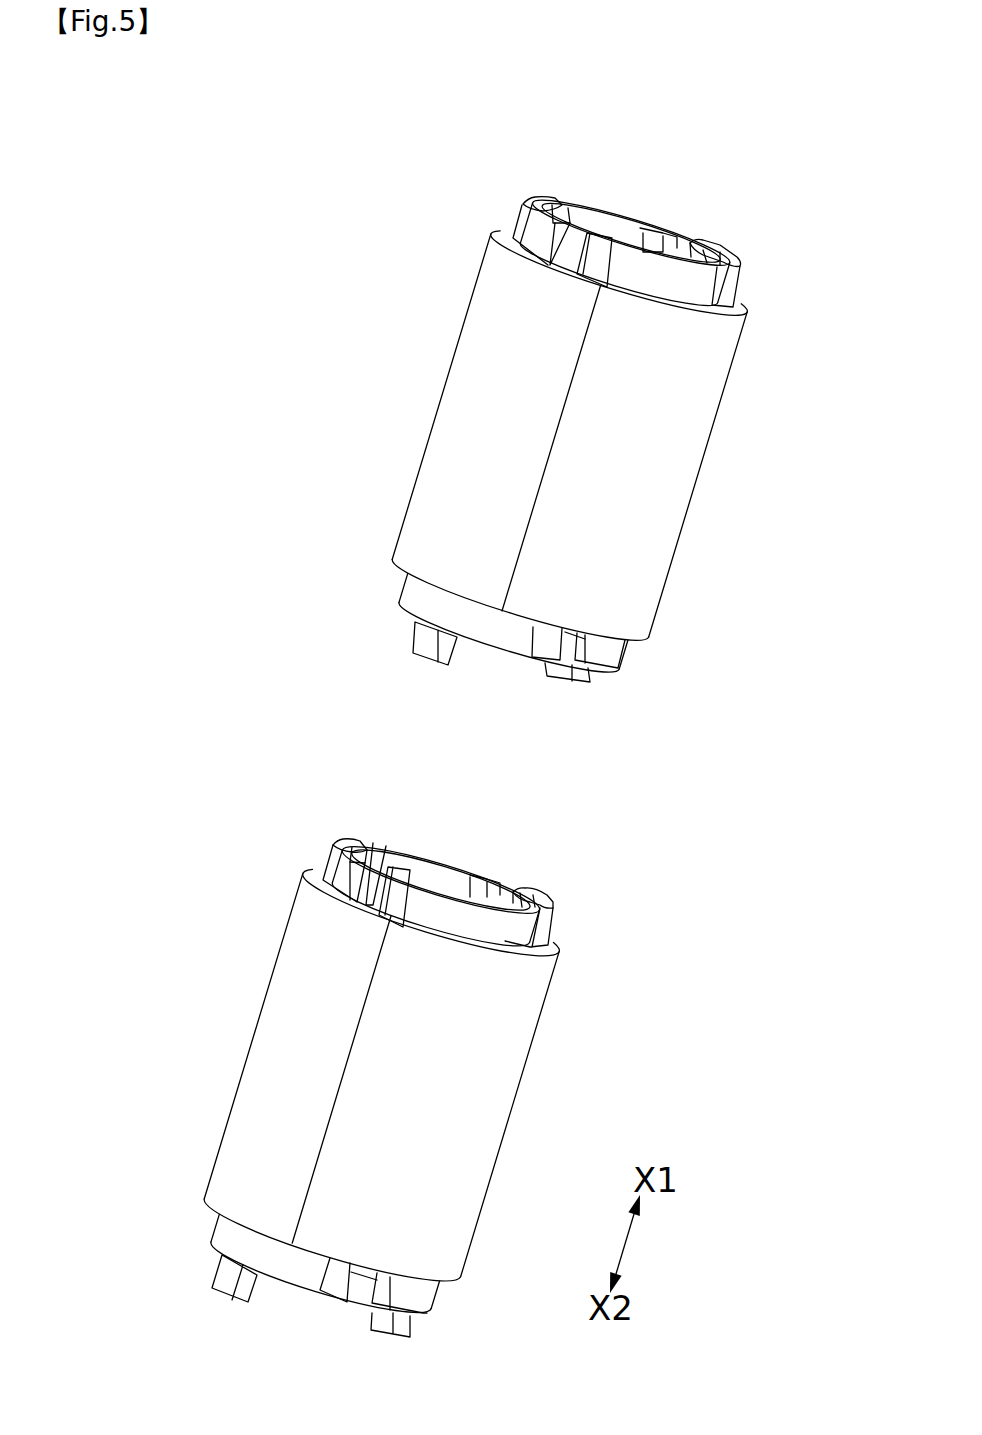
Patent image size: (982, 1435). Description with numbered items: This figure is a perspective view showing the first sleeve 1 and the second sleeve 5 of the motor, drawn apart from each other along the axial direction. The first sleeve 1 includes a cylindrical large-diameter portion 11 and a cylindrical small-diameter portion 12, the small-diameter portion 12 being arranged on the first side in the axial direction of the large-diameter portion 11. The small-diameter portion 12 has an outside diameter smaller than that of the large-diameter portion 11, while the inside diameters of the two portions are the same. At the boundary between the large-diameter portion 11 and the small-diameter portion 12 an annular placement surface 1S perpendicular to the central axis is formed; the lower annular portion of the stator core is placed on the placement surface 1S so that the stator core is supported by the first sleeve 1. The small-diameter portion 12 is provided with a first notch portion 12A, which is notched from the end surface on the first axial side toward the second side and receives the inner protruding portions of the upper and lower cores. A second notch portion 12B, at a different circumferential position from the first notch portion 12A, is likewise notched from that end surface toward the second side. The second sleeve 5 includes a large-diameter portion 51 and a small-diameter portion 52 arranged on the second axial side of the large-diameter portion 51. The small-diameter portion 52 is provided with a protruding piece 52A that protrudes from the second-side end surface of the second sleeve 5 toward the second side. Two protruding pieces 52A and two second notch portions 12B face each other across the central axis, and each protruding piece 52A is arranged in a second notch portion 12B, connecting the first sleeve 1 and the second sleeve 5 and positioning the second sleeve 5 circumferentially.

The second sleeve 5 is at (558, 162).
The large-diameter portion 51 is at (663, 475).
The small-diameter portion 52 is at (612, 660).
The protruding piece 52A is at (448, 657).
The first sleeve 1 is at (566, 858).
The large-diameter portion 11 is at (288, 1040).
The placement surface 1S is at (310, 871).
The small-diameter portion 12 is at (348, 840).
The first notch portion 12A is at (548, 938).
The second notch portion 12B is at (378, 862).